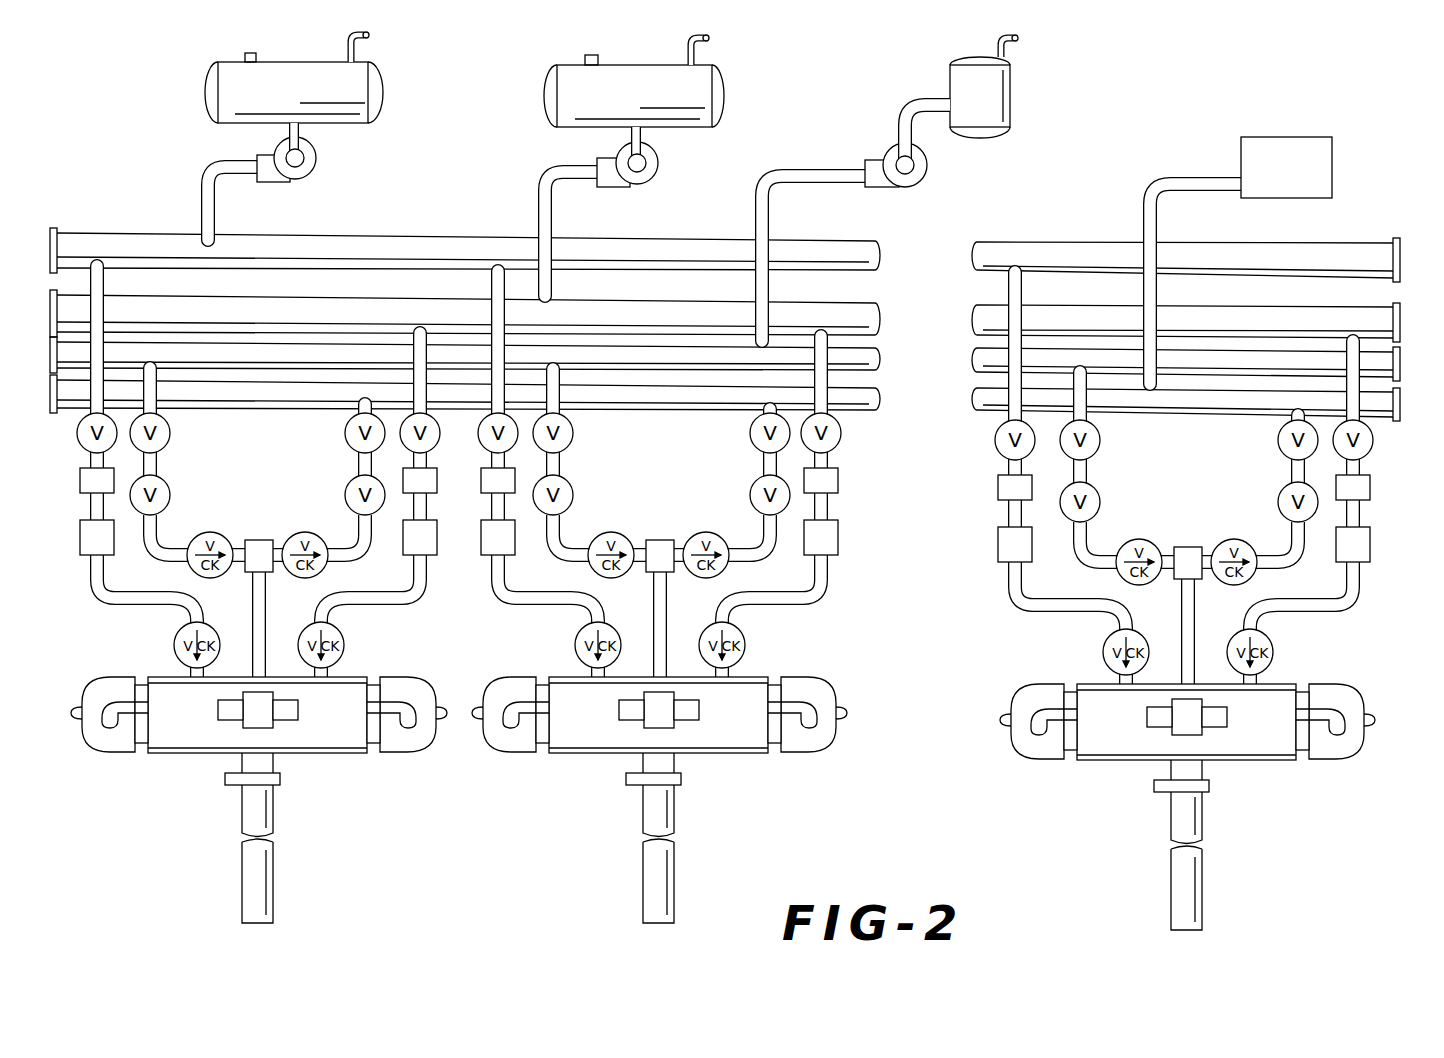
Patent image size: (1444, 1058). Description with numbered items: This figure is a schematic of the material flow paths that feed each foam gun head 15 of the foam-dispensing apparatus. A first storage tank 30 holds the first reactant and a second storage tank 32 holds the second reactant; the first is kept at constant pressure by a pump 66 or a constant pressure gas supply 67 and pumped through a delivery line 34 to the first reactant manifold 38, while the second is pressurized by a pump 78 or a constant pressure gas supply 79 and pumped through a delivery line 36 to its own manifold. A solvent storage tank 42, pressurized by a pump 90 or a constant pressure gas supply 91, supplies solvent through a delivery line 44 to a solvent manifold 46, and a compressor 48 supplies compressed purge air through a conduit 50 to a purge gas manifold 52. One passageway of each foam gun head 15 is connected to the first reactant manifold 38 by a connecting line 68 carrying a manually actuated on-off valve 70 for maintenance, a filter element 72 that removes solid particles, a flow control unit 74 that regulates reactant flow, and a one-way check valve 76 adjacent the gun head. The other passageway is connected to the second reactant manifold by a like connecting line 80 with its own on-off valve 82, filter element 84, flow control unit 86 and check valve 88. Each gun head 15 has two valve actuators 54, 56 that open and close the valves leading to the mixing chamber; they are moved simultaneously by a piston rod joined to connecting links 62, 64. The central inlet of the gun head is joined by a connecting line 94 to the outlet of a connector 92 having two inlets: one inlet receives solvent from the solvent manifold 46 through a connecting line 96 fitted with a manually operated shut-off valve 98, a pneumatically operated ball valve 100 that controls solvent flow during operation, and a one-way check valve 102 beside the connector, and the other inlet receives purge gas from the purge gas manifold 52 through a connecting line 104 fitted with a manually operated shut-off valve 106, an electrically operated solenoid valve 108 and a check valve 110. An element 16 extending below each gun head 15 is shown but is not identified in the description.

The foam gun head 15 is at (287, 762).
The discharge pipe 16 is at (273, 900).
The first storage tank 30 is at (292, 96).
The second storage tank 32 is at (648, 99).
The delivery line 34 is at (200, 170).
The delivery line 36 is at (543, 185).
The first reactant manifold 38 is at (388, 236).
The solvent storage tank 42 is at (990, 107).
The delivery line 44 is at (770, 215).
The solvent manifold 46 is at (878, 355).
The compressor 48 is at (1298, 177).
The conduit 50 is at (1143, 190).
The purge gas manifold 52 is at (985, 414).
The valve actuator 54 is at (100, 755).
The valve actuator 56 is at (408, 755).
The connecting link 62 is at (185, 728).
The connecting link 64 is at (338, 728).
The pump 66 is at (318, 165).
The constant pressure gas supply 67 is at (369, 41).
The connecting line 68 is at (120, 605).
The manually actuated on-off valve 70 is at (78, 438).
The filter element 72 is at (80, 485).
The flow control unit 74 is at (85, 555).
The one-way check valve 76 is at (174, 646).
The pump 78 is at (612, 187).
The constant pressure gas supply 79 is at (710, 43).
The connecting line 80 is at (385, 605).
The manually actuated on-off valve 82 is at (440, 440).
The filter element 84 is at (437, 485).
The flow control unit 86 is at (437, 548).
The one-way check valve 88 is at (345, 650).
The pump 90 is at (925, 183).
The constant pressure gas supply 91 is at (1018, 42).
The connector 92 is at (255, 540).
The connecting line 94 is at (268, 630).
The connecting line 96 is at (165, 543).
The manually operated shut-off valve 98 is at (170, 433).
The pneumatically operated ball valve 100 is at (170, 490).
The one-way check valve 102 is at (208, 578).
The connecting line 104 is at (348, 545).
The manually operated shut-off valve 106 is at (345, 433).
The electrically operated on-off solenoid valve 108 is at (347, 492).
The check valve 110 is at (303, 532).